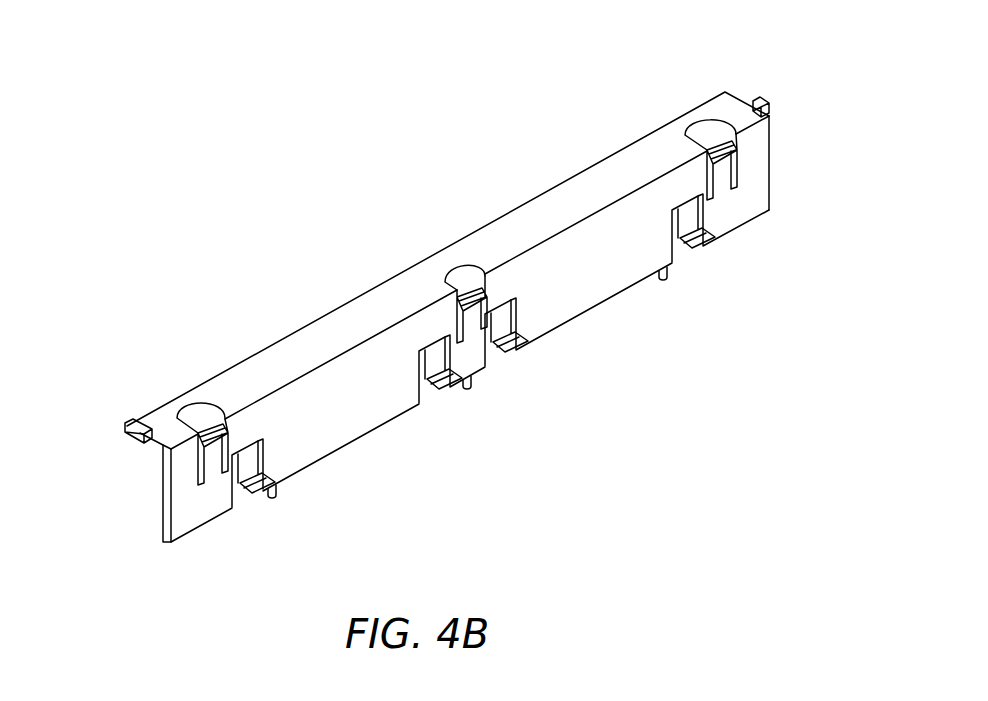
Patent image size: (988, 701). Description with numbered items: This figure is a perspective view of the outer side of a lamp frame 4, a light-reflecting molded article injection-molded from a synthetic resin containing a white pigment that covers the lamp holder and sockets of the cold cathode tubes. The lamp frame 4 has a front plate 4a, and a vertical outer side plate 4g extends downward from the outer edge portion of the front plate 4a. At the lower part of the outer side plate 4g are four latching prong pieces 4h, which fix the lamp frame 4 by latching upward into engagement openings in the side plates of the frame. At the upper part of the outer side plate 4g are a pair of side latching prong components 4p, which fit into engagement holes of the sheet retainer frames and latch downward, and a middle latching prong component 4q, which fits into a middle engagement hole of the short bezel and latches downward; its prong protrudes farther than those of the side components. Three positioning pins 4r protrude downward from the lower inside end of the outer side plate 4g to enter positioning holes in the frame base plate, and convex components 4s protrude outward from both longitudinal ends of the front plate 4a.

The lamp frame 4 is at (447, 297).
The front plate 4a is at (312, 337).
The vertical outer side plate 4g is at (363, 417).
The latching prong piece 4h is at (703, 242).
The side latching prong component 4p is at (737, 148).
The middle latching prong component 4q is at (488, 296).
The positioning pin 4r is at (668, 281).
The convex component 4s is at (755, 102).